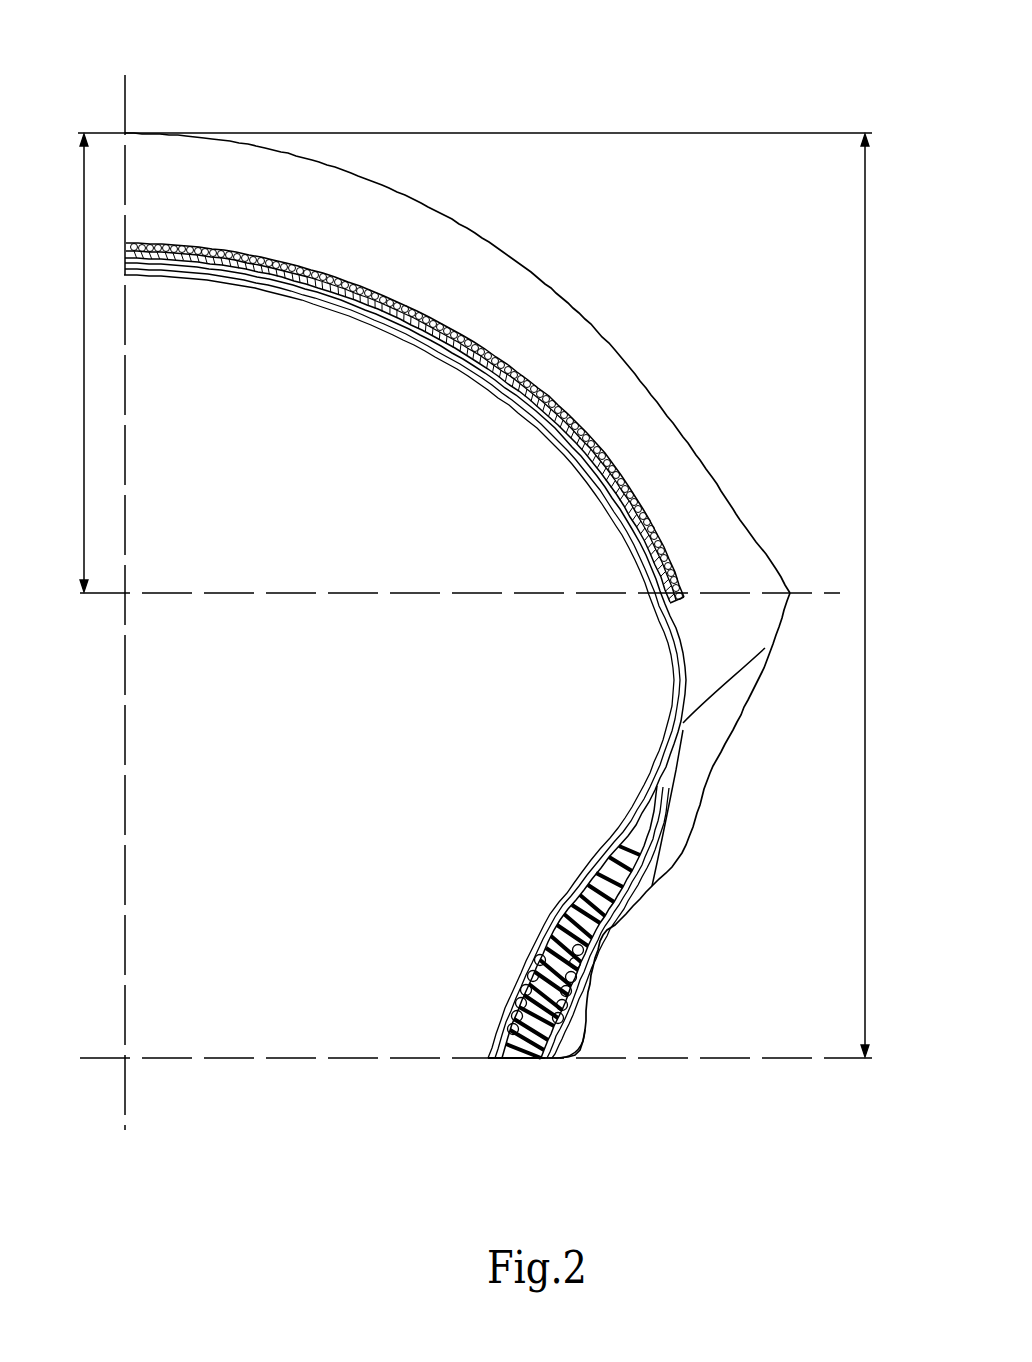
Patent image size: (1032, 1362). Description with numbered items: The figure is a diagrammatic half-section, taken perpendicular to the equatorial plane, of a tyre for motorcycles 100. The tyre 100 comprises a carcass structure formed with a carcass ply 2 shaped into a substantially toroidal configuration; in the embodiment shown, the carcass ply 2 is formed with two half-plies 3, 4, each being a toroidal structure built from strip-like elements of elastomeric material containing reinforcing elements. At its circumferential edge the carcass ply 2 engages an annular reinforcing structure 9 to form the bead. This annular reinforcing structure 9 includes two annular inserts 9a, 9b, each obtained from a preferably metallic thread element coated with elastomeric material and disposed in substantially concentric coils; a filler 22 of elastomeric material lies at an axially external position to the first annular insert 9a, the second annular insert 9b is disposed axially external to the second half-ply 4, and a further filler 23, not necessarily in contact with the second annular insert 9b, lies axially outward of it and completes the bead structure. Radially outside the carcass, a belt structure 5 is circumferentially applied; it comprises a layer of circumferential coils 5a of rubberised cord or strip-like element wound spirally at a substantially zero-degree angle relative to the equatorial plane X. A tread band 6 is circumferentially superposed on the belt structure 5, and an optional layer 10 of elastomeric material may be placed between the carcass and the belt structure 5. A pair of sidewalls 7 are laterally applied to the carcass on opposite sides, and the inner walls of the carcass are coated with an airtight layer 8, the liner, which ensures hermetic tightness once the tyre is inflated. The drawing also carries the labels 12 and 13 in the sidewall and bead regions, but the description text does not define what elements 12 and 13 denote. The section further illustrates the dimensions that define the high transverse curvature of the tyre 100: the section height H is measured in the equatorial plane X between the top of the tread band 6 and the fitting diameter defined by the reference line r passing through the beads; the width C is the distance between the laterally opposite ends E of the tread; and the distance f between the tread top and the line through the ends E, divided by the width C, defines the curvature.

The tyre for motorcycles 100 is at (640, 311).
The carcass ply 2 is at (314, 305).
The first half-ply 3 is at (553, 920).
The second half-ply 4 is at (627, 867).
The belt structure 5 is at (298, 290).
The circumferential coils 5a is at (460, 330).
The tread band 6 is at (247, 187).
The sidewall 7 is at (705, 768).
The airtight layer 8 is at (417, 335).
The annular reinforcing structure 9 is at (528, 968).
The first annular insert 9a is at (512, 980).
The second annular insert 9b is at (573, 990).
The layer of elastomeric material 10 is at (262, 263).
The reinforcing layer 12 is at (695, 648).
The reinforcing strip 13 is at (687, 612).
The filler 22 is at (523, 1058).
The further filler 23 is at (570, 1043).
The equatorial plane X is at (125, 97).
The width C is at (345, 593).
The section height H is at (865, 565).
The distance of the tread top f is at (84, 370).
The tread end E is at (790, 593).
The reference line r is at (700, 1060).